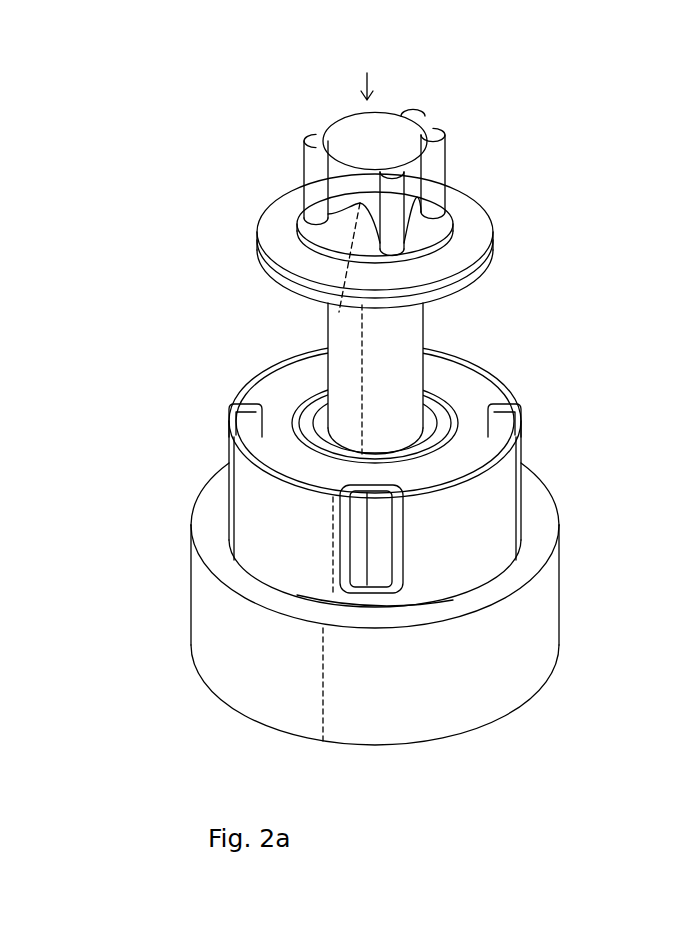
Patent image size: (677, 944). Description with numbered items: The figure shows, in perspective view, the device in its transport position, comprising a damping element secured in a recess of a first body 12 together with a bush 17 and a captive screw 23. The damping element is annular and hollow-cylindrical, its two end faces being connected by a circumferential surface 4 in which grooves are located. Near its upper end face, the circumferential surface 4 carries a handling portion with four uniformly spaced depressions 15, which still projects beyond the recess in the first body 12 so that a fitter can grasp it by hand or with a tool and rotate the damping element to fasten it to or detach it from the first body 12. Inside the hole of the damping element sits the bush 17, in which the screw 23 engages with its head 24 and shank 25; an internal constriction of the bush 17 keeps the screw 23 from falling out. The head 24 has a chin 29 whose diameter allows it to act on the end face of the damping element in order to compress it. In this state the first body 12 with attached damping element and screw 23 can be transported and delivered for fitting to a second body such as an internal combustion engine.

The circumferential surface 4 is at (265, 540).
The first body 12 is at (543, 623).
The depressions 15 is at (243, 422).
The bush 17 is at (440, 431).
The screw 23 is at (364, 67).
The head 24 is at (425, 139).
The shank 25 is at (336, 340).
The chin 29 is at (473, 283).